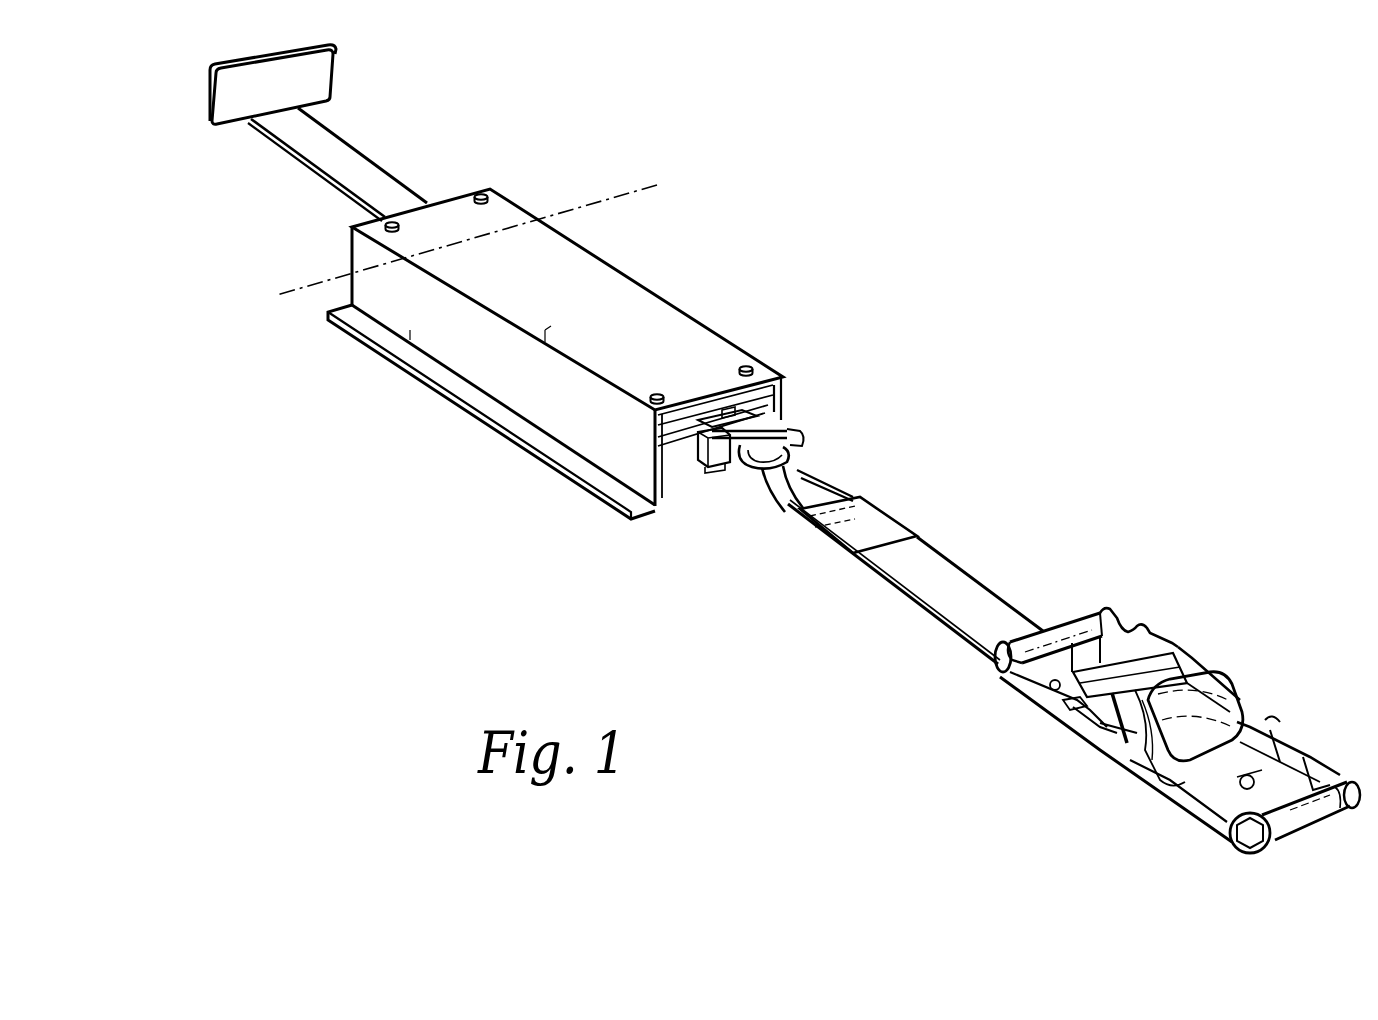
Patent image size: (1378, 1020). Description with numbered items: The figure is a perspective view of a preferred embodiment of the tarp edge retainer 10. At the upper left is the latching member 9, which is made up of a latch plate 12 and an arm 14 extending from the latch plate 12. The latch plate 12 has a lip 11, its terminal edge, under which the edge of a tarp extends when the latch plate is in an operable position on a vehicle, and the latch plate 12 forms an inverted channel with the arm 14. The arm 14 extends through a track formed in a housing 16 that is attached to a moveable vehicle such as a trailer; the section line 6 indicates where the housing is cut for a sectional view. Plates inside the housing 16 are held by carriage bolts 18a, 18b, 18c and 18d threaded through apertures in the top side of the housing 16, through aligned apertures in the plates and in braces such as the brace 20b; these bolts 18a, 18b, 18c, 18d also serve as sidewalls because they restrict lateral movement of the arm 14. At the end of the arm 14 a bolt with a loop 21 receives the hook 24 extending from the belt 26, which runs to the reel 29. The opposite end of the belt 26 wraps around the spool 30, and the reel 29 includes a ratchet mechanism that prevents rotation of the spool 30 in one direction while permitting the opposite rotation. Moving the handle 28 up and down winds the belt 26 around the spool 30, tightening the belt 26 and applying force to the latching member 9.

The section line 6- 6 is at (657, 185).
The latching member 9 is at (301, 110).
The tarp edge retainer 10 is at (577, 360).
The lip 11 is at (275, 62).
The latch plate 12 is at (230, 100).
The arm 14 is at (360, 173).
The housing 16 is at (372, 287).
The carriage bolt 18a is at (485, 192).
The carriage bolt 18b is at (385, 226).
The carriage bolt 18c is at (660, 404).
The carriage bolt 18d is at (748, 366).
The brace 20b is at (784, 392).
The loop 21 is at (749, 466).
The hook 24 is at (820, 487).
The belt 26 is at (915, 539).
The handle 28 is at (1088, 622).
The reel 29 is at (1176, 694).
The spool 30 is at (1201, 704).